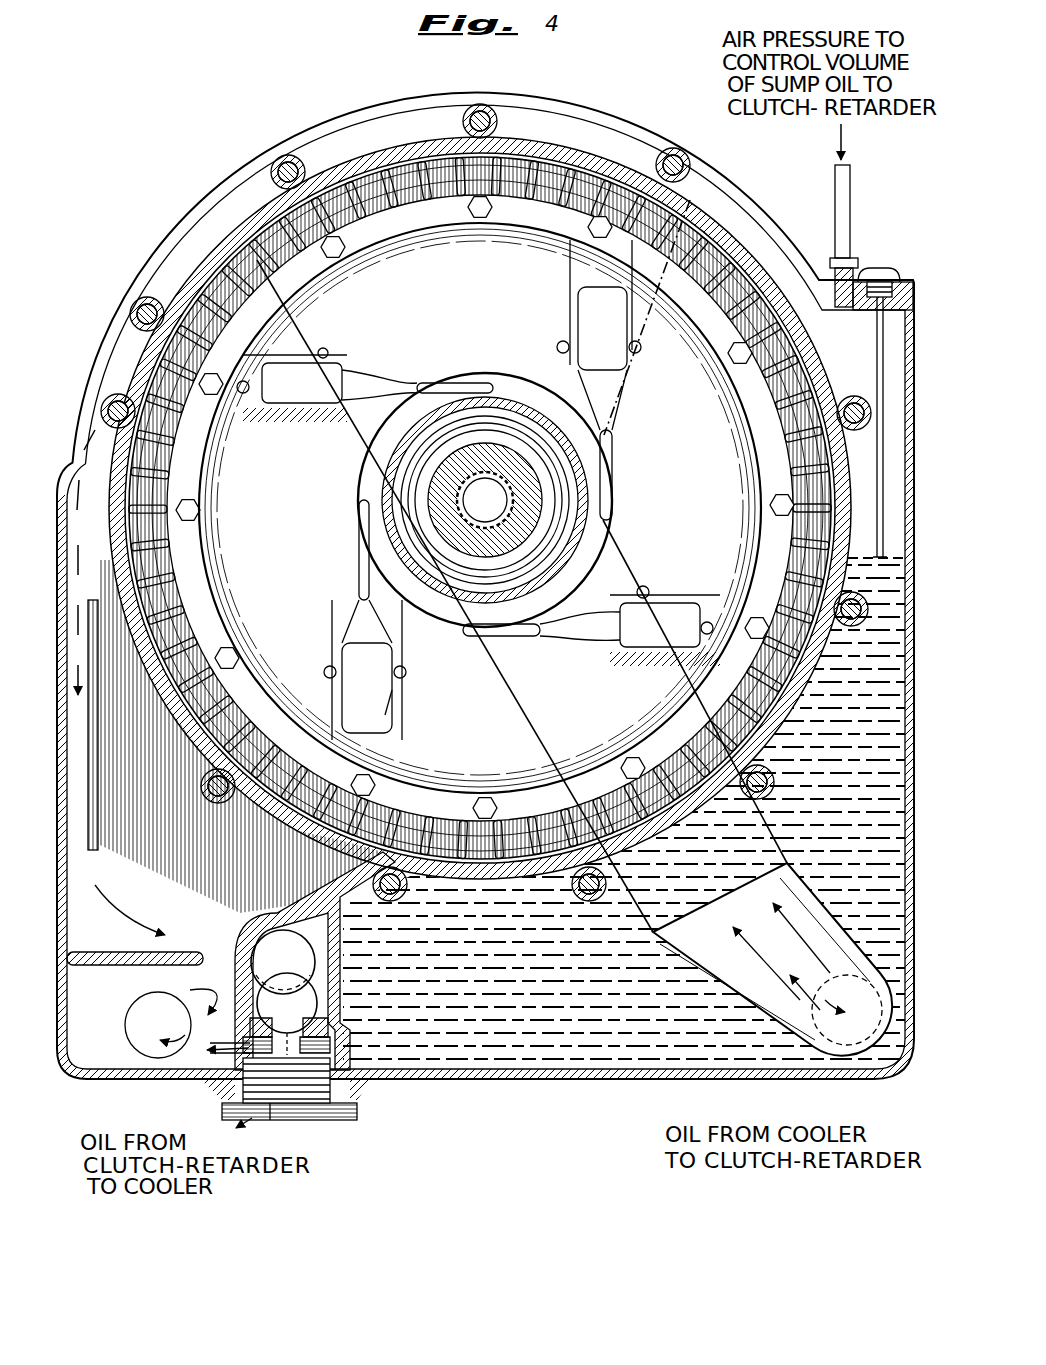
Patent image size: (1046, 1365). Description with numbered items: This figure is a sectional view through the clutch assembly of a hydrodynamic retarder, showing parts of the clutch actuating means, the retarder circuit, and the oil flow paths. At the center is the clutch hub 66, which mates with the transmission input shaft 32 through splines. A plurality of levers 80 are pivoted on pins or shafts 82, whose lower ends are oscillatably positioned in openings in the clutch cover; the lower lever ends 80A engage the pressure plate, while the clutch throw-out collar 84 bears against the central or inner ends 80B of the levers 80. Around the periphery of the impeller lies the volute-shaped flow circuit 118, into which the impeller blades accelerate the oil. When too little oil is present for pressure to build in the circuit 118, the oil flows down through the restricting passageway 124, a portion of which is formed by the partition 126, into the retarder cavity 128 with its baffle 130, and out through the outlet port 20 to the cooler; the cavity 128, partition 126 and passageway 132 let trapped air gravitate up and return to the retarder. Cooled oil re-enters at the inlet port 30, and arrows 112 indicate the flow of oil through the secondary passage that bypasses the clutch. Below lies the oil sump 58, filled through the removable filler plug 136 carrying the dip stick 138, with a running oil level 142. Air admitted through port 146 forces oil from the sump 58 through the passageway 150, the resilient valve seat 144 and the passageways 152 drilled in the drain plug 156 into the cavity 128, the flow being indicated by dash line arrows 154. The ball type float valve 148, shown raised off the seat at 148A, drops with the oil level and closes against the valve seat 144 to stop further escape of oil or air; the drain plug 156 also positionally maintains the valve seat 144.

The port 20 is at (172, 1012).
The inlet port 30 is at (852, 1050).
The transmission input shaft 32 is at (498, 507).
The oil sump 58 is at (602, 1052).
The clutch hub 66 is at (485, 480).
The levers 80 is at (352, 372).
The lower lever ends 80A is at (372, 717).
The inner ends of levers 80B is at (463, 378).
The pins or shafts 82 is at (328, 348).
The clutch throw-out collar 84 is at (510, 372).
The arrows 112 is at (770, 946).
The circuit 118 is at (217, 260).
The restricting passageway 124 is at (95, 435).
The partition 126 is at (102, 835).
The retarder cavity 128 is at (133, 898).
The baffle 130 is at (198, 952).
The passageway 132 is at (192, 640).
The filler plug 136 is at (900, 267).
The dip stick 138 is at (876, 337).
The oil level 142 is at (905, 556).
The valve seat 144 is at (337, 1057).
The port 146 is at (832, 190).
The ball type float valve 148 is at (287, 1014).
The raised float valve position 148A is at (283, 962).
The passageway 150 is at (340, 1012).
The passageways 152 is at (266, 1055).
The dash line arrows 154 is at (226, 1037).
The drain plug 156 is at (233, 1128).